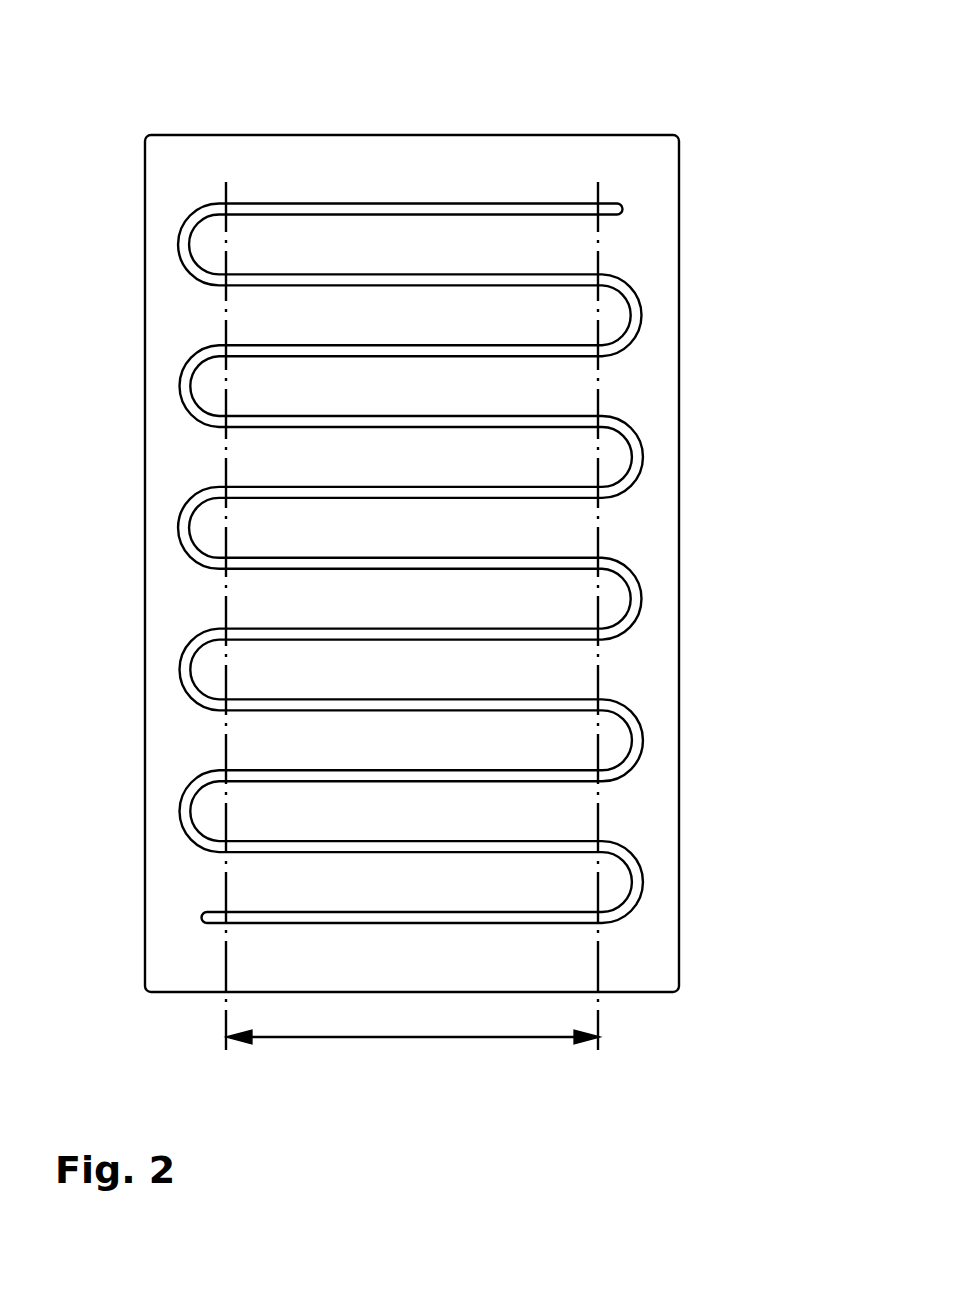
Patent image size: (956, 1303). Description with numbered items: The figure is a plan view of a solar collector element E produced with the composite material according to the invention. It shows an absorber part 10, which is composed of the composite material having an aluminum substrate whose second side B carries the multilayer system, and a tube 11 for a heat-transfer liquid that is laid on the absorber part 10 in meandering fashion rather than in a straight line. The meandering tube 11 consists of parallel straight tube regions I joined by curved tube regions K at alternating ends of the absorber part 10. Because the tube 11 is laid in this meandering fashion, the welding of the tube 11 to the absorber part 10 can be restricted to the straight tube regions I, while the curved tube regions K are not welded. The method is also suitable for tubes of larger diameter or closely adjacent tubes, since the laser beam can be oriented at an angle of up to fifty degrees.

The absorber part 10 is at (481, 463).
The tube 11 is at (481, 564).
The second side B is at (626, 167).
The curved tube regions K is at (641, 722).
The solar collector element E is at (669, 1028).
The straight tube regions I is at (414, 1038).